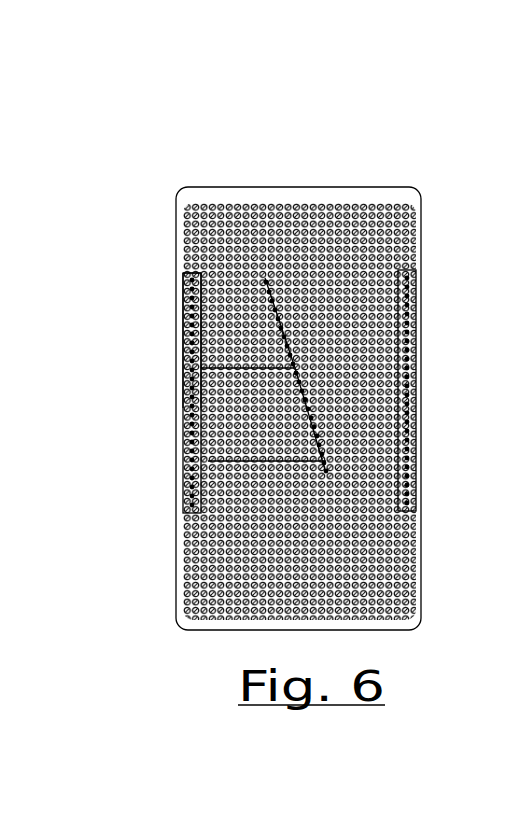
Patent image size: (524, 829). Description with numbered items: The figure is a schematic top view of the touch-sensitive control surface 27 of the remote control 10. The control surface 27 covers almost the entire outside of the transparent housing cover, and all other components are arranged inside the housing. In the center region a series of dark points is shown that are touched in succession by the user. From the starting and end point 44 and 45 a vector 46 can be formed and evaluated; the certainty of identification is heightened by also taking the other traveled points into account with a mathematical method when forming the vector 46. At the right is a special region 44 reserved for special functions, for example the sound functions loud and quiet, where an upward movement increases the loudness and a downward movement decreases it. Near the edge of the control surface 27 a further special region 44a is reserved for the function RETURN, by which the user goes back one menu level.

The remote control 10 is at (342, 178).
The touch-sensitive control surface 27 is at (232, 222).
The special region 44 is at (168, 477).
The special region for RETURN 44a is at (168, 315).
The end point 45 is at (168, 269).
The vector 46 is at (168, 373).